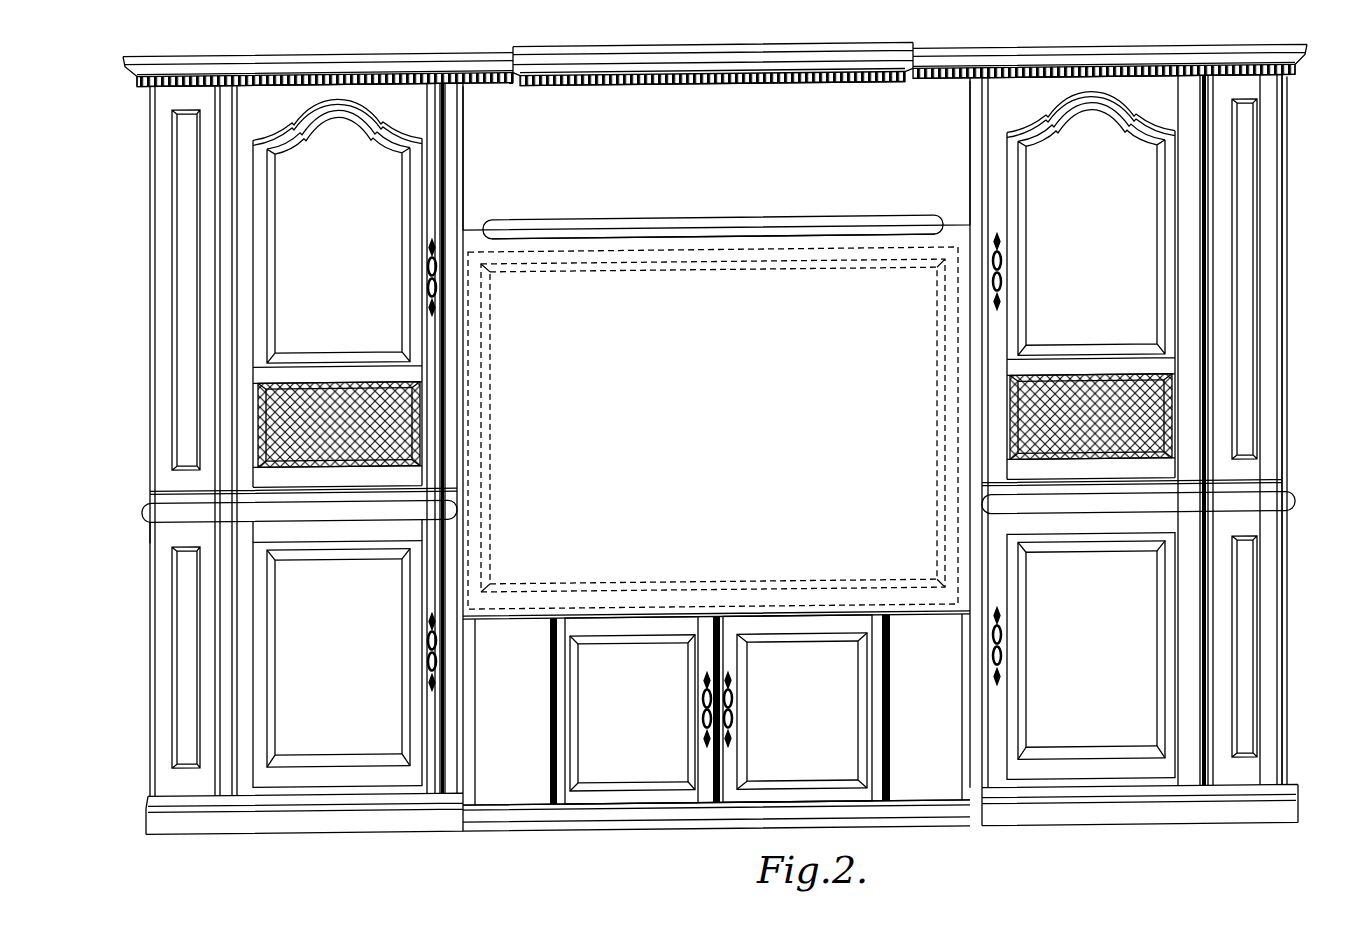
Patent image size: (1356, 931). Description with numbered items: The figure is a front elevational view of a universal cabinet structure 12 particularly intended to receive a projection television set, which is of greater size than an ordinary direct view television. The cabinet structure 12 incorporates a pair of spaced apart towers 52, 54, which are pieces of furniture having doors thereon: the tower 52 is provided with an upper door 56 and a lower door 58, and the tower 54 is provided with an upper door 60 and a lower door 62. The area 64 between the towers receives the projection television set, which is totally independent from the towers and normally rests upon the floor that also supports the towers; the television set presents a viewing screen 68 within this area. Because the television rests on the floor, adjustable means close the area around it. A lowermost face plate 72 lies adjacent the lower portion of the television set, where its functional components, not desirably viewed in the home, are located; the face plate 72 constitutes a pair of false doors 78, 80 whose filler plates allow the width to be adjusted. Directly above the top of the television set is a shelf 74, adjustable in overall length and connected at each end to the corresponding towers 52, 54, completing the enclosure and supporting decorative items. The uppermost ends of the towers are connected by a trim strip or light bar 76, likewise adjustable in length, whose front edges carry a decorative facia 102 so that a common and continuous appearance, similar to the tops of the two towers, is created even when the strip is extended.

The cabinet structure 12 is at (133, 301).
The tower 52 is at (152, 70).
The tower 54 is at (1296, 50).
The upper door 56 is at (377, 242).
The lower door 58 is at (373, 662).
The upper door 60 is at (1115, 253).
The lower door 62 is at (1125, 653).
The area 64 is at (705, 188).
The viewing screen 68 is at (746, 462).
The face plate 72 is at (670, 758).
The shelf 74 is at (760, 226).
The trim strip or light bar 76 is at (650, 105).
The false door 78 is at (658, 708).
The false door 80 is at (828, 708).
The decorative facia 102 is at (848, 82).